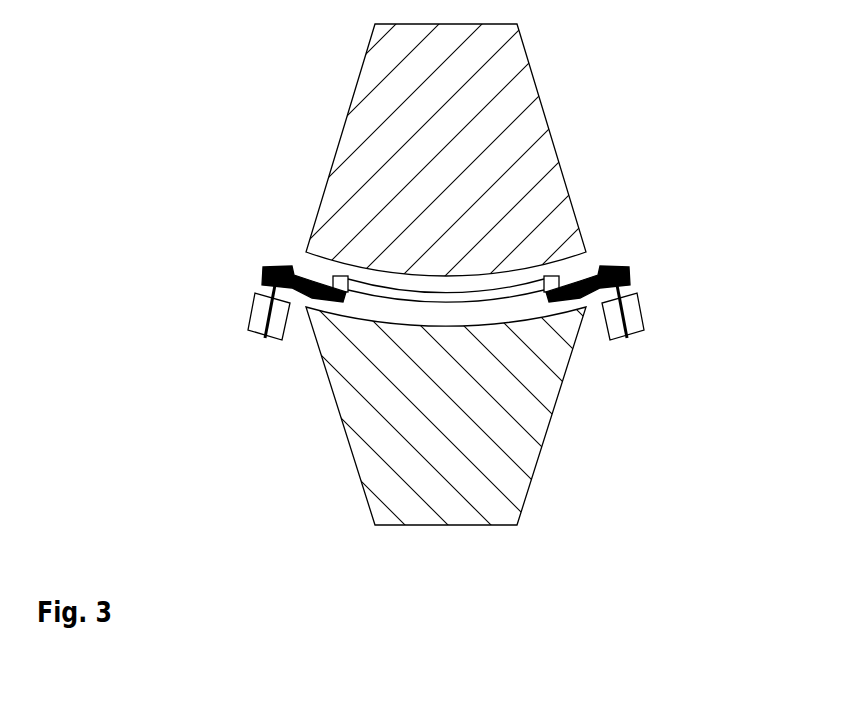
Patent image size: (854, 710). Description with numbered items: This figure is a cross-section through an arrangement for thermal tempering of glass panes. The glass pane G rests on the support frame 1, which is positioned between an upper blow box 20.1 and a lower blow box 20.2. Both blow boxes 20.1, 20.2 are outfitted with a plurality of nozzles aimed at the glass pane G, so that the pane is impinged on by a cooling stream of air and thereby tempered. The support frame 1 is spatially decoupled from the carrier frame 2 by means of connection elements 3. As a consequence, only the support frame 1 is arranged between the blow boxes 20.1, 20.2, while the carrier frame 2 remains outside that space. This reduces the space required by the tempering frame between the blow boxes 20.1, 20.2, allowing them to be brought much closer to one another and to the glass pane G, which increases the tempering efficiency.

The upper blow box 20.1 is at (528, 138).
The lower blow box 20.2 is at (533, 408).
The support frame 1 is at (565, 290).
The connection elements 3 is at (623, 272).
The carrier frame 2 is at (628, 320).
The glass pane G is at (365, 285).